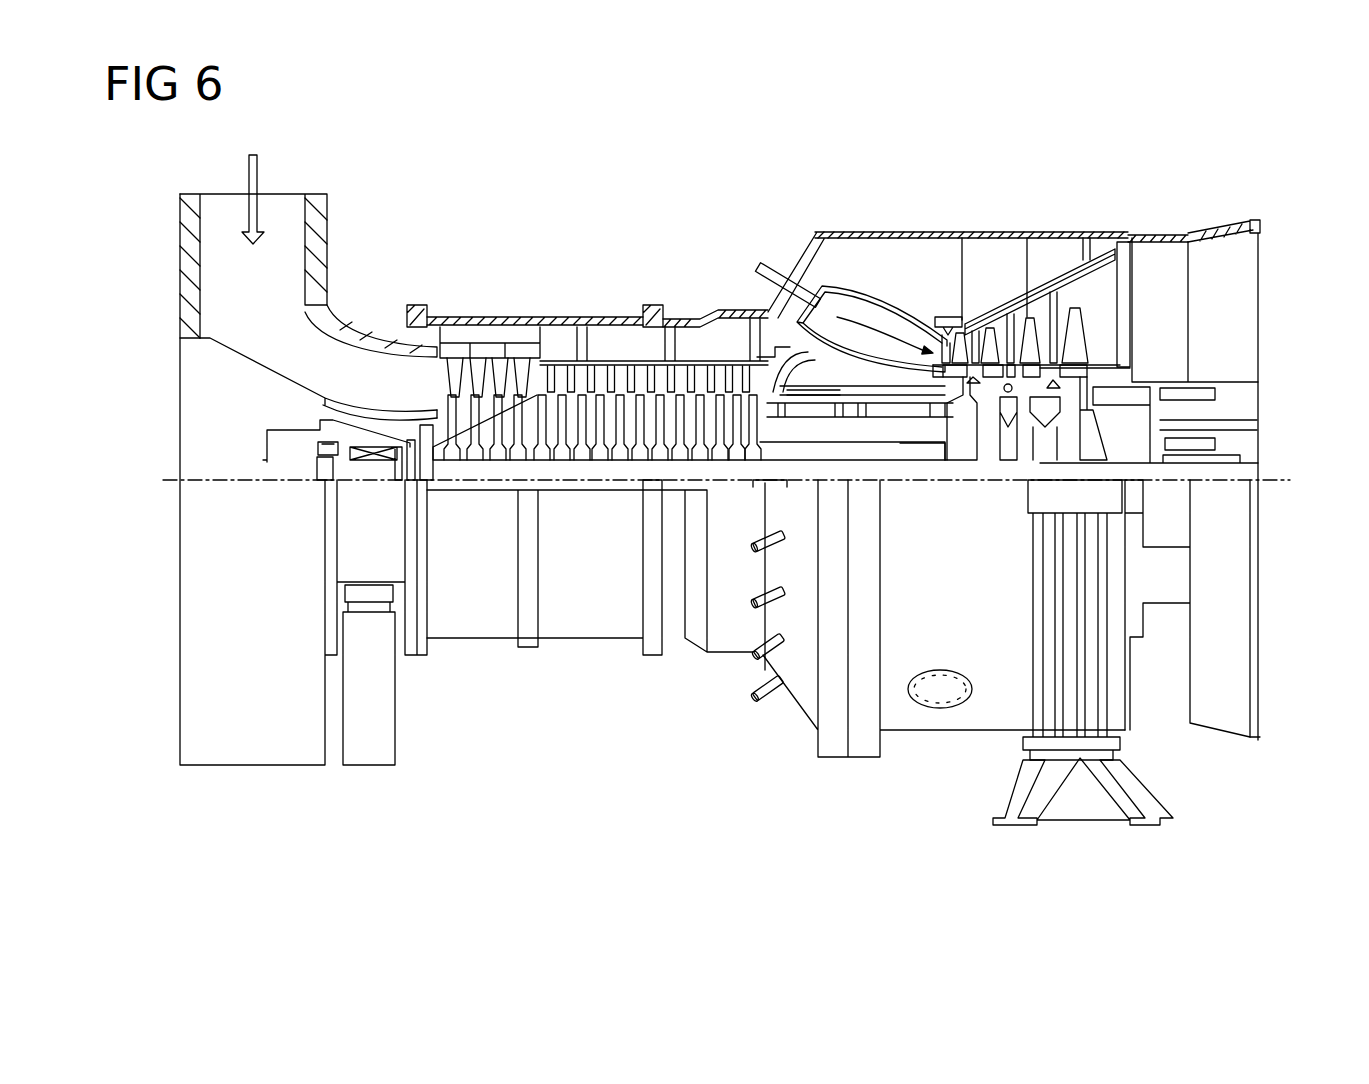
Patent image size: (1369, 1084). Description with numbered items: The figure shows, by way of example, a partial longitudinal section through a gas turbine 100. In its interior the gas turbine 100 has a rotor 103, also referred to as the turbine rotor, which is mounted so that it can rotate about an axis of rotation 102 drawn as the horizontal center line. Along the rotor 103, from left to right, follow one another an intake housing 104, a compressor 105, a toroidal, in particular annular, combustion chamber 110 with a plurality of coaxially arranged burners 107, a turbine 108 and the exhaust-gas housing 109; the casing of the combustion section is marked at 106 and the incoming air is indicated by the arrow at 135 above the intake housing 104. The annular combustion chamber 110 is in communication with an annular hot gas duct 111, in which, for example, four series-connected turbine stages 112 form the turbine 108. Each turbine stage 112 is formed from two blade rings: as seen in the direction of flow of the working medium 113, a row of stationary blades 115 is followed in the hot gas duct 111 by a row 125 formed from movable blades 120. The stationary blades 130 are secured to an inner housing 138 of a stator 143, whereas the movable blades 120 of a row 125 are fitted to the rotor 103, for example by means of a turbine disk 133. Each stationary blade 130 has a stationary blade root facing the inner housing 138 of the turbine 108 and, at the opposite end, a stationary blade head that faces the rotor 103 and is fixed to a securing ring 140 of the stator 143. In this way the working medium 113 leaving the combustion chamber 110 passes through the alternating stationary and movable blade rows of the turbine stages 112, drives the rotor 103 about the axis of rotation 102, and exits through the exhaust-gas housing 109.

The gas turbine 100 is at (577, 209).
The axis of rotation 102 is at (170, 480).
The rotor 103 is at (790, 443).
The intake housing 104 is at (317, 258).
The compressor 105 is at (503, 300).
The combustion section casing 106 is at (913, 303).
The burner 107 is at (755, 264).
The turbine 108 is at (965, 209).
The exhaust-gas housing 109 is at (1173, 233).
The combustion chamber 110 is at (847, 300).
The hot gas duct 111 is at (1098, 315).
The turbine stage 112 is at (1082, 209).
The working medium 113 is at (867, 328).
The row of stationary blades 115 is at (1047, 268).
The movable blade 120 is at (1010, 378).
The row of movable blades 125 is at (1103, 254).
The stationary blade 130 is at (983, 345).
The turbine disk 133 is at (1073, 445).
The inlet air flow 135 is at (258, 186).
The inner housing 138 is at (993, 284).
The securing ring 140 is at (945, 372).
The stator 143 is at (925, 237).